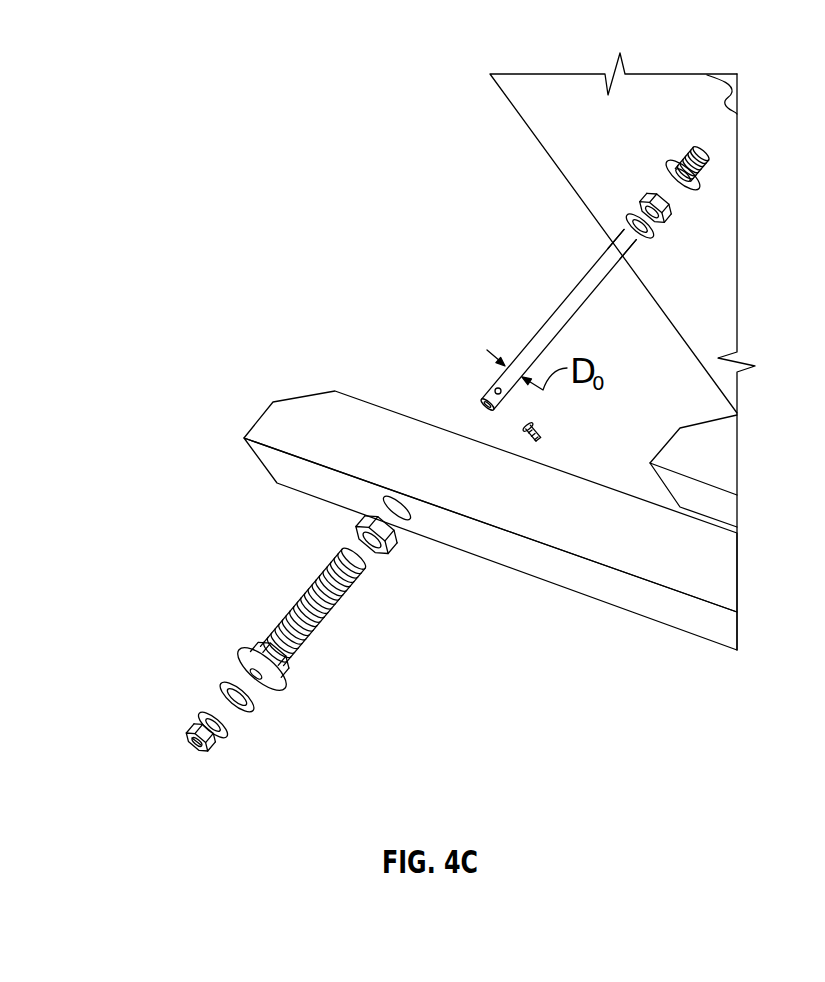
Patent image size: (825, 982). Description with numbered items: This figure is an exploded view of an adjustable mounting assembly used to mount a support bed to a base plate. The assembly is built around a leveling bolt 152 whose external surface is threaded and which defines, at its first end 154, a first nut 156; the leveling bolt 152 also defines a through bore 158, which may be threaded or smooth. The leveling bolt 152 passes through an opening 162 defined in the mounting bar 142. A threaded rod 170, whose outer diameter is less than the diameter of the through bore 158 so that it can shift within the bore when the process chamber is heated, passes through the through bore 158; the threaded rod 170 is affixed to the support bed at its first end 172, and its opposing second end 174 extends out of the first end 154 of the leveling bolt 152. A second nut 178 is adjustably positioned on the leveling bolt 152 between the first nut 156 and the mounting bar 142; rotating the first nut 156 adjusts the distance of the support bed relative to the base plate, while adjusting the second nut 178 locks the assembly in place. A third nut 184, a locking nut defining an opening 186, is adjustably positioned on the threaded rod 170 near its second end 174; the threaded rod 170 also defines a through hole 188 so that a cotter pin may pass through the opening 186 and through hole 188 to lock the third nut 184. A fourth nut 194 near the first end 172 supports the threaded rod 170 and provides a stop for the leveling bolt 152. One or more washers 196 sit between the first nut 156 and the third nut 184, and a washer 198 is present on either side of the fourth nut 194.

The mounting bar 142 is at (285, 412).
The opening 162 is at (387, 494).
The second nut 178 is at (393, 560).
The leveling bolt 152 is at (327, 625).
The first end 154 is at (243, 634).
The first nut 156 is at (240, 650).
The through bore 158 is at (255, 683).
The washers 196 is at (222, 687).
The third nut 184 is at (190, 728).
The opening 186 is at (195, 760).
The threaded rod 170 is at (590, 270).
The first end 172 is at (622, 225).
The second end 174 is at (487, 412).
The through hole 188 is at (496, 389).
The fourth nut 194 is at (668, 214).
The washer 198 is at (533, 423).